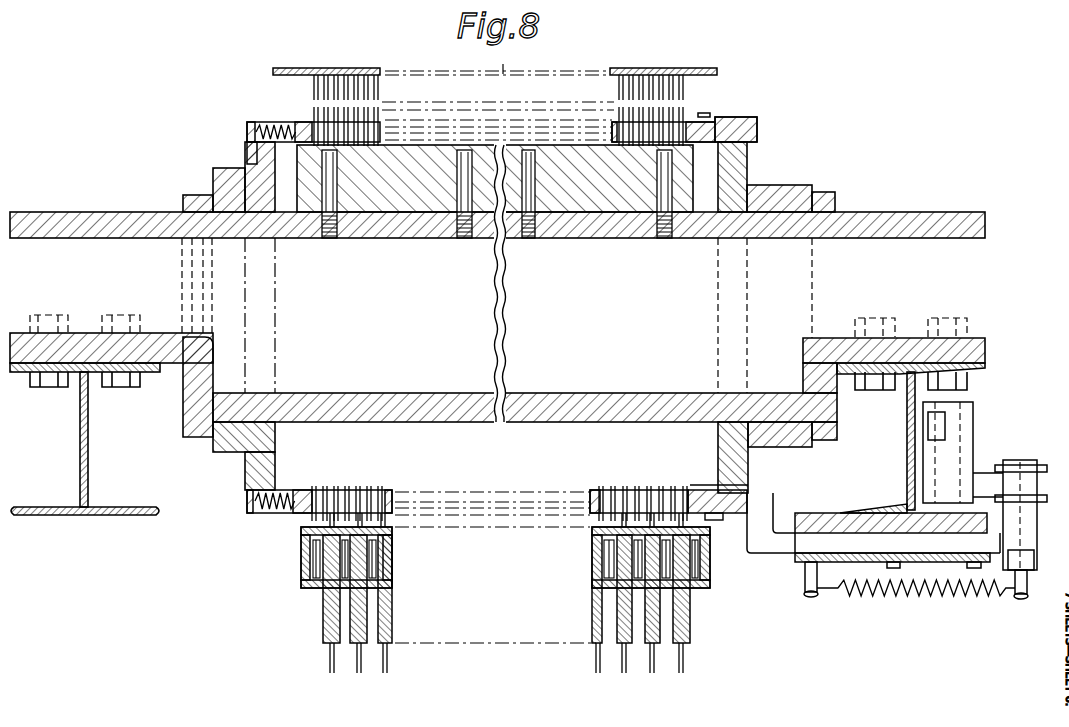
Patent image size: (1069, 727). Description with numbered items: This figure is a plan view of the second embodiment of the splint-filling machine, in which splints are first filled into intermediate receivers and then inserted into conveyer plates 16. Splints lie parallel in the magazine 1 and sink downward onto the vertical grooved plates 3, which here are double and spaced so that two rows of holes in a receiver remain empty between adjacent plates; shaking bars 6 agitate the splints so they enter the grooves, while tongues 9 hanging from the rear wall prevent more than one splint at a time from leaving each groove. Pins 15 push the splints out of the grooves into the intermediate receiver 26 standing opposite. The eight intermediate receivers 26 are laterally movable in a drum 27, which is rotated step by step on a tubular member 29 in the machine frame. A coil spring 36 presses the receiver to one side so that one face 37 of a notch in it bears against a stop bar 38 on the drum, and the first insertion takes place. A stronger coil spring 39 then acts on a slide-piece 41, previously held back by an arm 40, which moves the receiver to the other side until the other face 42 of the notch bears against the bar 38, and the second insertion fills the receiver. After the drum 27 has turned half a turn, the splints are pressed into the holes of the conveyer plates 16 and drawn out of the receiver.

The magazine 1 is at (300, 565).
The grooved plates 3 is at (330, 598).
The shaking bars 6 is at (385, 583).
The tongues 9 is at (392, 533).
The pins 15 is at (372, 670).
The conveyer plates 16 is at (306, 68).
The intermediate receivers 26 is at (678, 122).
The drum 27 is at (747, 157).
The tubular member 29 is at (905, 222).
The coil spring 36 is at (268, 125).
The face of notch 37 is at (683, 490).
The stop bar 38 is at (716, 490).
The stronger coil spring 39 is at (933, 594).
The arm 40 is at (982, 478).
The slide-piece 41 is at (1028, 478).
The other face of notch 42 is at (745, 520).